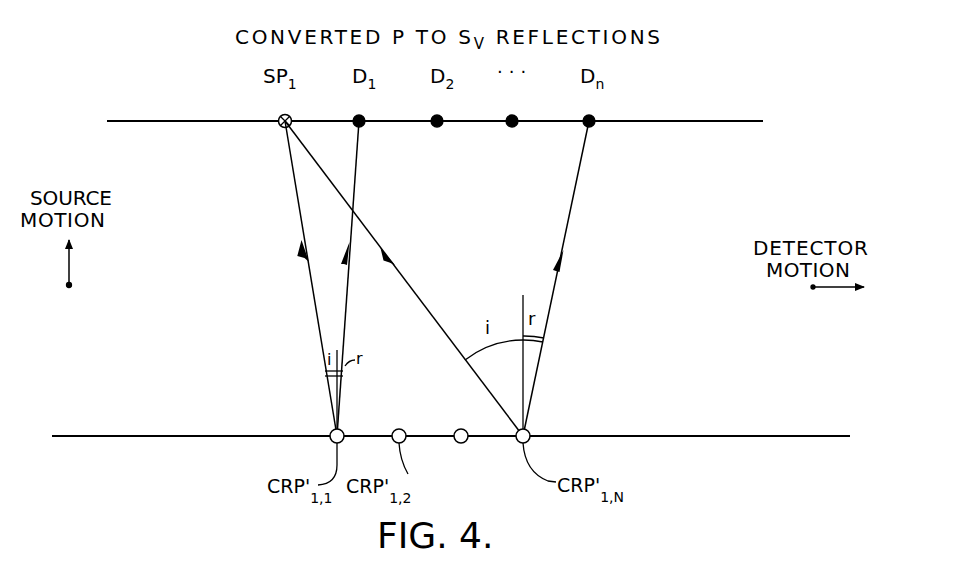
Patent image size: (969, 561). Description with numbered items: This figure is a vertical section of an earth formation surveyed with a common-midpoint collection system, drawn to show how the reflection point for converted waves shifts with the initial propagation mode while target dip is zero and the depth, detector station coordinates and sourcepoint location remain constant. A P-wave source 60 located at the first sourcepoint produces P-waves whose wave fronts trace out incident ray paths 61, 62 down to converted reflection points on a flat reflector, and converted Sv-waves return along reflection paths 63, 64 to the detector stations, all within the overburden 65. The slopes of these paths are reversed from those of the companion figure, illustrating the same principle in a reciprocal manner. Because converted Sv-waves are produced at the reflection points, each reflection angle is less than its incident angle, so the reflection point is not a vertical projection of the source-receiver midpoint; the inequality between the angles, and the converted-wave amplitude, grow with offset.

The P-wave source 60 is at (281, 129).
The incident ray path 61 is at (297, 218).
The incident ray path 62 is at (430, 310).
The reflection path 63 is at (349, 236).
The reflection path 64 is at (568, 230).
The overburden 65 is at (640, 340).